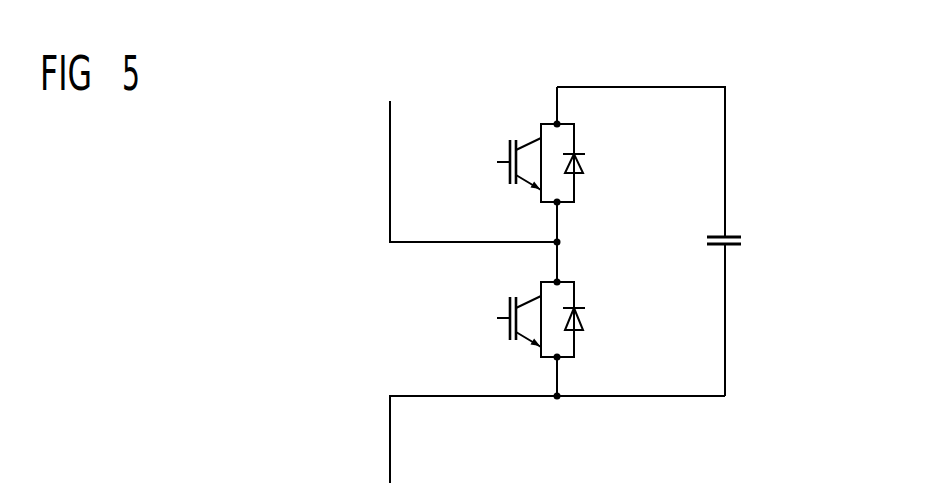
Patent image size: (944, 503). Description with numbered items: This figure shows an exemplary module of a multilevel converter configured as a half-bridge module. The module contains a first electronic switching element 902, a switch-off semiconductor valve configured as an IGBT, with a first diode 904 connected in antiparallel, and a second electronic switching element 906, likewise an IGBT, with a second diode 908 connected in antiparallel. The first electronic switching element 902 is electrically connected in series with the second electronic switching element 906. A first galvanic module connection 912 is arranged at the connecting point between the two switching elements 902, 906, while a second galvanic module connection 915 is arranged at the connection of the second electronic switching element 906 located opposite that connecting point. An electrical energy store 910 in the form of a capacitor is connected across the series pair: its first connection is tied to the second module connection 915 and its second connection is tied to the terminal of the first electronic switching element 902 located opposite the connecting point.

The first electronic switching element 902 is at (505, 179).
The first diode 904 is at (586, 161).
The second electronic switching element 906 is at (505, 335).
The second diode 908 is at (586, 317).
The electrical energy store 910 is at (742, 242).
The first galvanic module connection 912 is at (390, 170).
The second galvanic module connection 915 is at (390, 428).